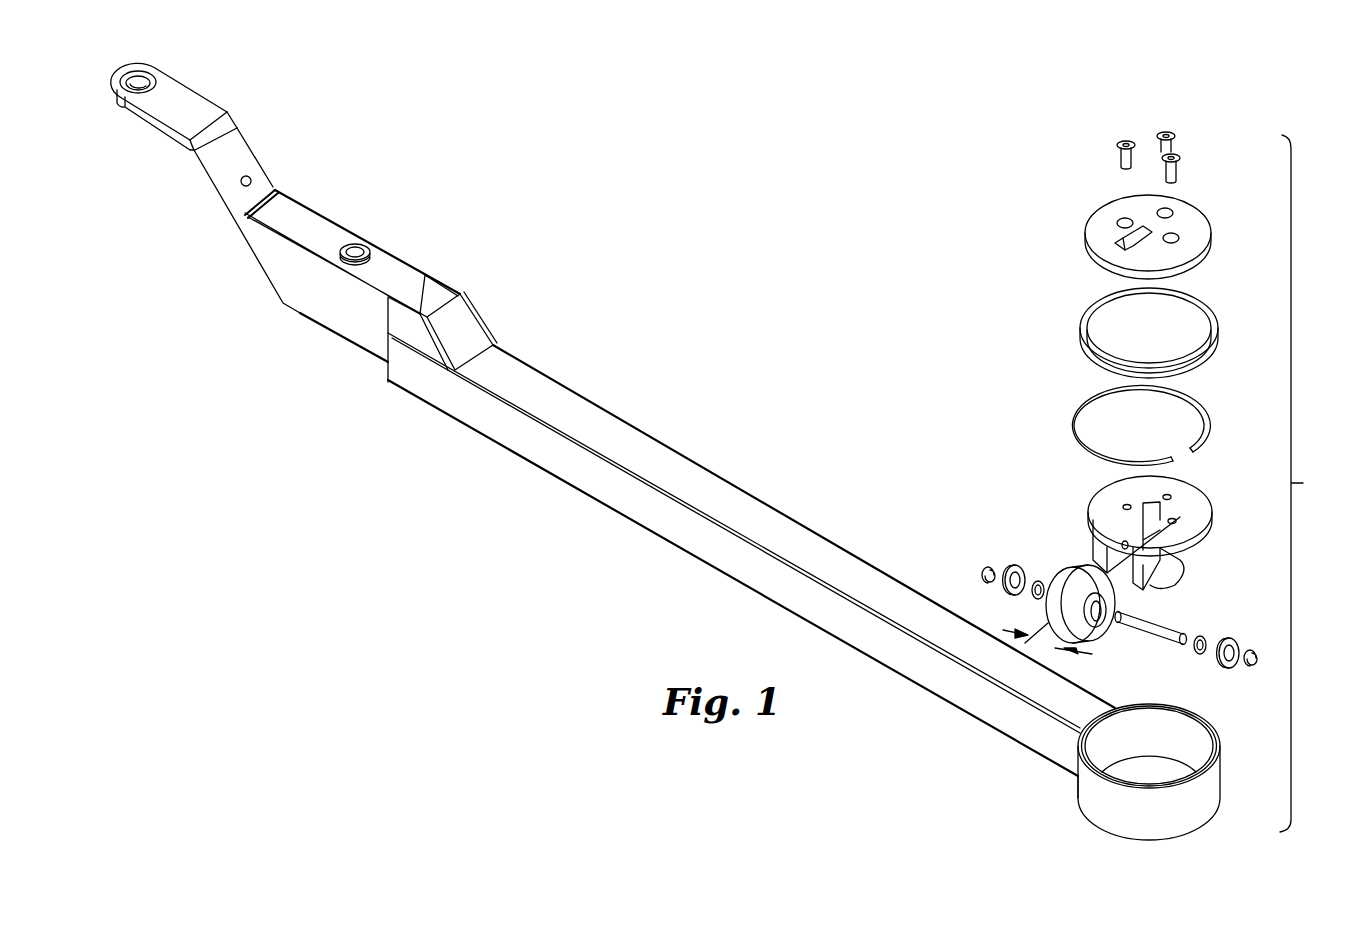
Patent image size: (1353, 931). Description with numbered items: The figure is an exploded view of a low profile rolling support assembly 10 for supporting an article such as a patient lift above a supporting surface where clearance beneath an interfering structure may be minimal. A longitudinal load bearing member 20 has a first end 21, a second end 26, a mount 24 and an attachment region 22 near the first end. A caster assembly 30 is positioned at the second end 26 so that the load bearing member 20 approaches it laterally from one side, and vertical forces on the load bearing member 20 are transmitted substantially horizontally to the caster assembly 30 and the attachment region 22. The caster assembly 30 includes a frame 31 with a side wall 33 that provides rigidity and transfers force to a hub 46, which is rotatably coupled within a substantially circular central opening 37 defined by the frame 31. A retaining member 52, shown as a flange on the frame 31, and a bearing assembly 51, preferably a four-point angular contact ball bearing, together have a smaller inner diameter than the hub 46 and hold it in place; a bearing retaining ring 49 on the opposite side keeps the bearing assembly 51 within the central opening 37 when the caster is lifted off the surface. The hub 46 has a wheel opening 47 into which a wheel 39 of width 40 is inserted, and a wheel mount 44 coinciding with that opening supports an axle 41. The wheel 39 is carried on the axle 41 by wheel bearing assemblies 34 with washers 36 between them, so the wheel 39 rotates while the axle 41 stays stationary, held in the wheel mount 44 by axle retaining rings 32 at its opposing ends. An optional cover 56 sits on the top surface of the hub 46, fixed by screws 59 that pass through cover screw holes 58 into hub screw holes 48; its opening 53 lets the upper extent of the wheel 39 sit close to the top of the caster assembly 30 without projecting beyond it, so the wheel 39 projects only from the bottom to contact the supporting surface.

The rolling support assembly 10 is at (762, 333).
The load bearing member 20 is at (609, 406).
The first end 21 is at (171, 102).
The attachment region 22 is at (129, 120).
The mount 24 is at (358, 228).
The second end 26 is at (1125, 792).
The caster assembly 30 is at (1128, 437).
The frame 31 is at (1125, 772).
The axle retaining rings 32 is at (1103, 594).
The side wall 33 is at (1091, 828).
The wheel bearing assemblies 34 is at (1124, 583).
The washers 36 is at (1113, 583).
The central opening 37 is at (1094, 746).
The wheel 39 is at (1076, 560).
The width 40 is at (1061, 657).
The axle 41 is at (1151, 643).
The wheel mount 44 is at (1138, 519).
The hub 46 is at (1152, 519).
The wheel opening 47 is at (1198, 564).
The hub screw holes 48 is at (1198, 485).
The bearing retaining ring 49 is at (1109, 425).
The bearing assembly 51 is at (1103, 333).
The retaining member 52 is at (1177, 746).
The opening 53 is at (1101, 253).
The cover 56 is at (1163, 223).
The cover screw holes 58 is at (1196, 205).
The screws 59 is at (1148, 113).